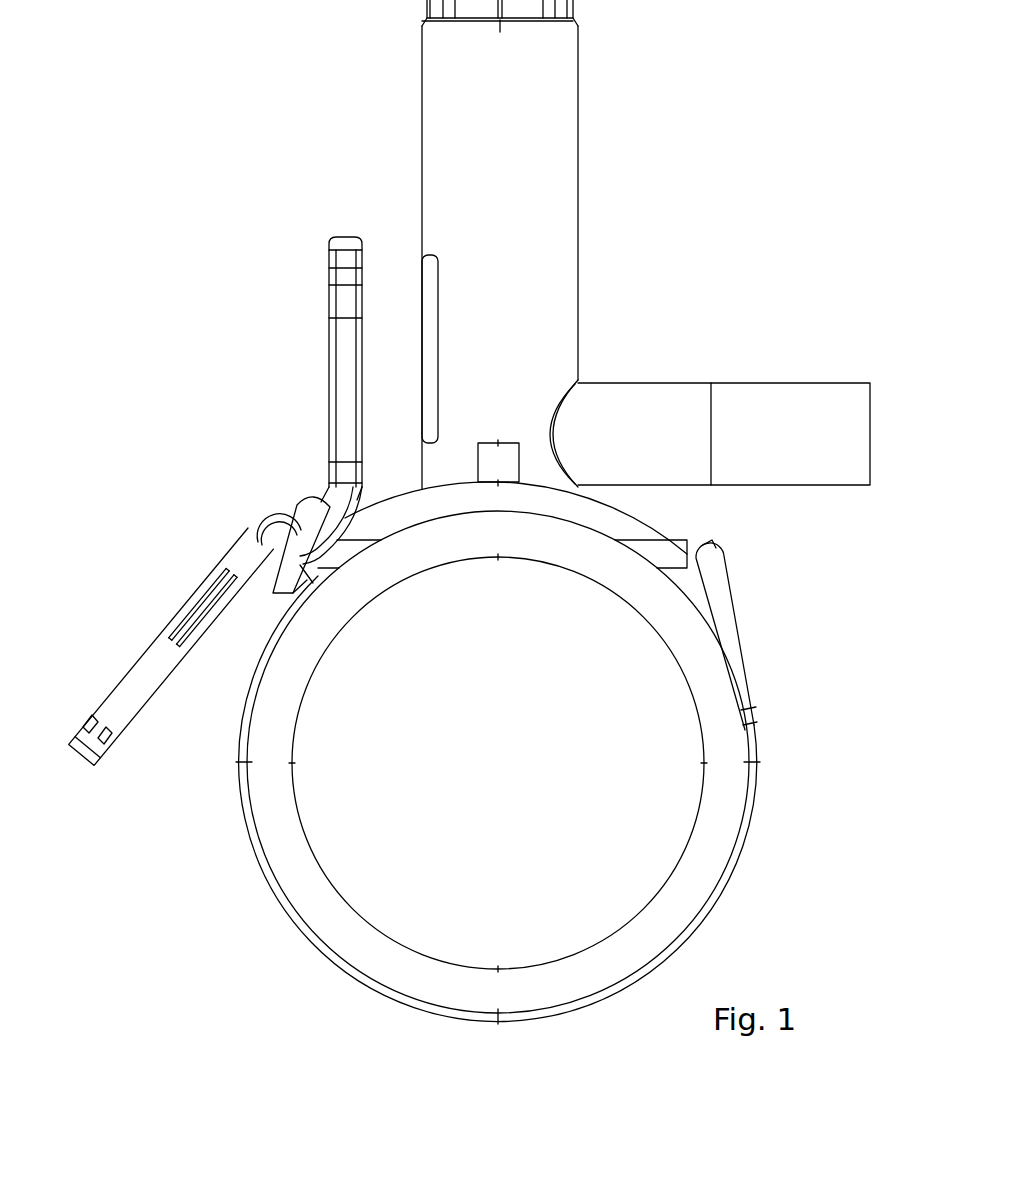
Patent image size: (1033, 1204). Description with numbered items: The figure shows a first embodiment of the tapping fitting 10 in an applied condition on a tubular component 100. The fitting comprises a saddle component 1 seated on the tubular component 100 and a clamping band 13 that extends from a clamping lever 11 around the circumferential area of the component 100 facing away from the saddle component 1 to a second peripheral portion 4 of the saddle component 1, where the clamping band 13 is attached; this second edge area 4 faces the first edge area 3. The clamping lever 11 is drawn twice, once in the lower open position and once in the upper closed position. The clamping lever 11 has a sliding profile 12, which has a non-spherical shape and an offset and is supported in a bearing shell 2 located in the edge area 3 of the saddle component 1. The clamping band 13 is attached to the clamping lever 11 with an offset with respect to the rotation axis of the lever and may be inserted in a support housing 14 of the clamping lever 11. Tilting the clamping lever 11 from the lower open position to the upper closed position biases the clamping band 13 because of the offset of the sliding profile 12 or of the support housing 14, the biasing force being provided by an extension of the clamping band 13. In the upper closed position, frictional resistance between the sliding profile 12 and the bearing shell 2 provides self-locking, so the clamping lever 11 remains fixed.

The tapping fitting 10 is at (139, 514).
The saddle component 1 is at (566, 205).
The tubular component 100 is at (702, 870).
The clamping band 13 is at (325, 950).
The second peripheral portion 4 is at (731, 575).
The clamping lever 11 is at (342, 355).
The support housing 14 is at (320, 500).
The bearing shell 2 is at (360, 487).
The sliding profile 12 is at (262, 517).
The edge area 3 is at (313, 583).